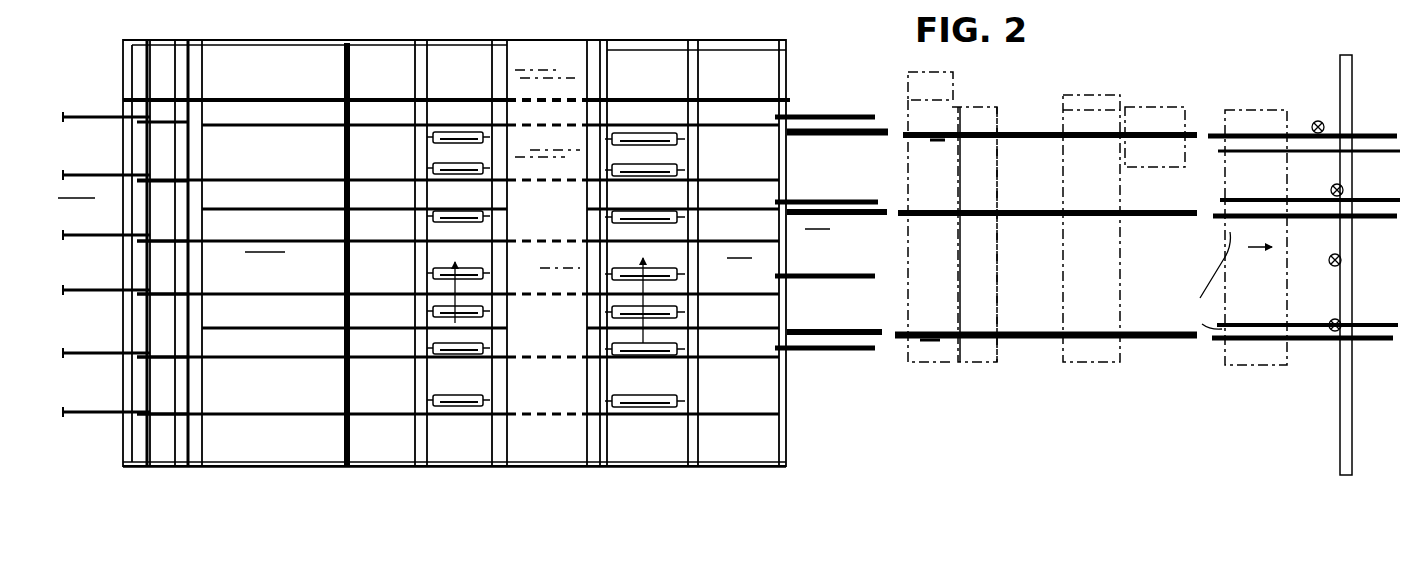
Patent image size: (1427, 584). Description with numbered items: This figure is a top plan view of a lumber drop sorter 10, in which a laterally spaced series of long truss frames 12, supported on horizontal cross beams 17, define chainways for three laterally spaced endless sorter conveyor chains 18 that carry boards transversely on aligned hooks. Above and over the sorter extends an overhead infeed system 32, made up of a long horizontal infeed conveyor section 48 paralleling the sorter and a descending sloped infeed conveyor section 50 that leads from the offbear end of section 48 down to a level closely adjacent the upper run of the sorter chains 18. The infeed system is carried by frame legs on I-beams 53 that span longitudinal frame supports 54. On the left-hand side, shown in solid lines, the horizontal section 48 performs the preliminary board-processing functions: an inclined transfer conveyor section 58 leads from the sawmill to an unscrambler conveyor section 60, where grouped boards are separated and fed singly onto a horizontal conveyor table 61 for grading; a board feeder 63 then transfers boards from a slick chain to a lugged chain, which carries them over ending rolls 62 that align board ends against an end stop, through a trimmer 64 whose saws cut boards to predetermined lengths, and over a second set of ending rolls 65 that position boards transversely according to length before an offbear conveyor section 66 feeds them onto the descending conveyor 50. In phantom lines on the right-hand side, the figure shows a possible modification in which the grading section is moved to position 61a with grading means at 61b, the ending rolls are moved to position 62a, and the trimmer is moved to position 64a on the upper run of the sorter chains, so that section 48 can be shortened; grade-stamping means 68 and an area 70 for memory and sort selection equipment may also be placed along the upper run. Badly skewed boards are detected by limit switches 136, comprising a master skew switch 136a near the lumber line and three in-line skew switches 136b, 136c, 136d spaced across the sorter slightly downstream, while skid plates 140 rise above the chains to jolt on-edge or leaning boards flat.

The lumber drop sorter 10 is at (1053, 211).
The truss frames 12 is at (801, 318).
The horizontal cross beams 17 is at (1352, 397).
The sorter conveyor chains 18 is at (866, 318).
The infeed system 32 is at (789, 44).
The horizontal infeed conveyor section 48 is at (719, 43).
The descending sloped infeed conveyor section 50 is at (819, 112).
The I-beams 53 is at (692, 453).
The longitudinal frame supports 54 is at (638, 468).
The inclined transfer conveyor section 58 is at (100, 118).
The unscrambler conveyor section 60 is at (162, 118).
The horizontal conveyor table 61 is at (258, 120).
The grading section position 61a is at (960, 106).
The grading means 61b is at (955, 95).
The ending rolls 62 is at (465, 133).
The ending rolls position 62a is at (1000, 118).
The board feeder 63 is at (354, 92).
The trimmer 64 is at (572, 52).
The trimmer position 64a is at (1070, 95).
The ending rolls 65 is at (636, 134).
The offbear conveyor section 66 is at (732, 125).
The grade-stamping means 68 is at (1196, 85).
The memory and sort selection equipment area 70 is at (1233, 108).
The limit switches 136 is at (1353, 209).
The master skew switch 136a is at (1316, 121).
The in-line skew switch 136b is at (1331, 186).
The in-line skew switch 136c is at (1333, 266).
The in-line skew switch 136d is at (1339, 318).
The skid plate 140 is at (1199, 280).